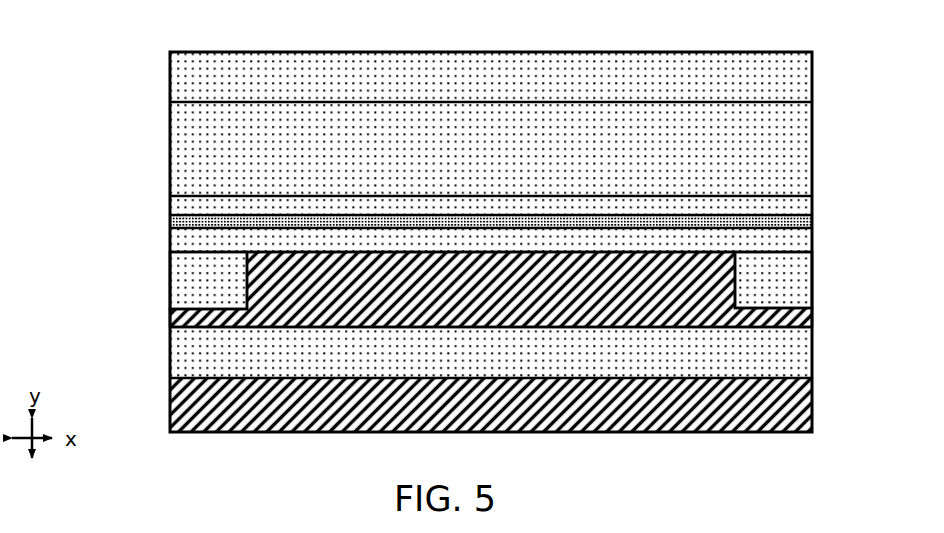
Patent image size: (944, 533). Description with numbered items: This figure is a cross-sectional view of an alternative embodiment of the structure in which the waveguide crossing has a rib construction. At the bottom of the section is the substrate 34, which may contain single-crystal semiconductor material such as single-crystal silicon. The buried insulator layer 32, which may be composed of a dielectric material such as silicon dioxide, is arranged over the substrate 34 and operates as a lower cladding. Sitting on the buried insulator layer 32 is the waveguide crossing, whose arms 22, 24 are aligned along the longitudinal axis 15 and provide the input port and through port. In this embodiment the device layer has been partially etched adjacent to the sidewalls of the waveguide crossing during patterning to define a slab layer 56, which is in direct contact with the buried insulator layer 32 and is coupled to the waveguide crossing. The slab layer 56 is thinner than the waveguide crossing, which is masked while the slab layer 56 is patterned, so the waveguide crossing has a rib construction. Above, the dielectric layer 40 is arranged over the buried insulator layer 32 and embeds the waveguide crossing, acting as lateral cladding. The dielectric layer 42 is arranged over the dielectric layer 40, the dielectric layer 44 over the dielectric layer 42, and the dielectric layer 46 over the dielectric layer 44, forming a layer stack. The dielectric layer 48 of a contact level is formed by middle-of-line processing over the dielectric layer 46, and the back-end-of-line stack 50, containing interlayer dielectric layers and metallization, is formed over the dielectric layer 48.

The longitudinal axis 15 is at (490, 290).
The arm 22 is at (188, 277).
The arm 24 is at (665, 285).
The buried insulator layer 32 is at (187, 348).
The substrate 34 is at (185, 412).
The dielectric layer 40 is at (188, 289).
The dielectric layer 42 is at (775, 241).
The dielectric layer 44 is at (188, 220).
The dielectric layer 46 is at (775, 208).
The dielectric layer 48 is at (188, 140).
The back-end-of-line stack 50 is at (770, 82).
The slab layer 56 is at (183, 316).